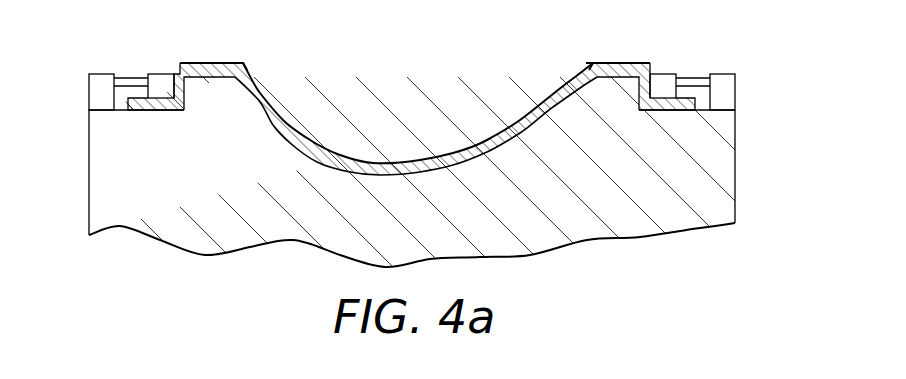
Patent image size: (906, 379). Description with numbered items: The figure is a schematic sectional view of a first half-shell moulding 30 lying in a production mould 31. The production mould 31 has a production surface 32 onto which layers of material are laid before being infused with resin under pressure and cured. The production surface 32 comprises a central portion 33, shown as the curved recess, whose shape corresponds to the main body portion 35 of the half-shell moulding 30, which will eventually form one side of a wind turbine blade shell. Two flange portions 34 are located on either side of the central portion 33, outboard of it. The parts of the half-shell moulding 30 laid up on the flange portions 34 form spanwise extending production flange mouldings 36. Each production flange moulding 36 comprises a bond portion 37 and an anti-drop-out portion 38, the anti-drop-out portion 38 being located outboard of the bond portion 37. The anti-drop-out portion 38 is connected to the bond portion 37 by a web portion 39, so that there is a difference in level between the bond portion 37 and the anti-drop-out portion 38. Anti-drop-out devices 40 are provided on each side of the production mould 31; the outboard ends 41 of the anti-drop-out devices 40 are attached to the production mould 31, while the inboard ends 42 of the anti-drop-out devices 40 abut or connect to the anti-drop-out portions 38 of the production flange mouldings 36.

The first half-shell moulding 30 is at (455, 118).
The production mould 31 is at (735, 162).
The production surface 32 is at (480, 157).
The central portion 33 is at (288, 153).
The flange portions 34 is at (613, 78).
The main body portion 35 is at (270, 110).
The production flange mouldings 36 is at (624, 68).
The bond portion 37 is at (593, 68).
The anti-drop-out portions 38 is at (670, 105).
The web portions 39 is at (648, 72).
The anti-drop-out devices 40 is at (723, 73).
The outboard ends 41 is at (730, 95).
The inboard ends 42 is at (668, 78).